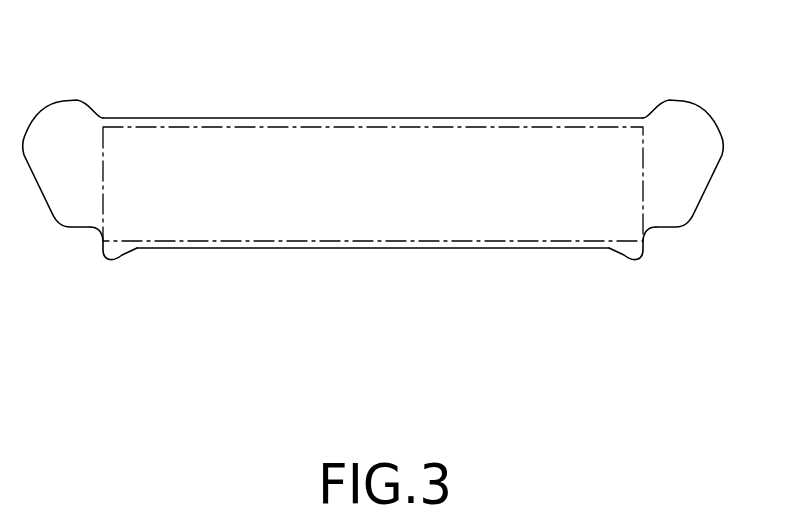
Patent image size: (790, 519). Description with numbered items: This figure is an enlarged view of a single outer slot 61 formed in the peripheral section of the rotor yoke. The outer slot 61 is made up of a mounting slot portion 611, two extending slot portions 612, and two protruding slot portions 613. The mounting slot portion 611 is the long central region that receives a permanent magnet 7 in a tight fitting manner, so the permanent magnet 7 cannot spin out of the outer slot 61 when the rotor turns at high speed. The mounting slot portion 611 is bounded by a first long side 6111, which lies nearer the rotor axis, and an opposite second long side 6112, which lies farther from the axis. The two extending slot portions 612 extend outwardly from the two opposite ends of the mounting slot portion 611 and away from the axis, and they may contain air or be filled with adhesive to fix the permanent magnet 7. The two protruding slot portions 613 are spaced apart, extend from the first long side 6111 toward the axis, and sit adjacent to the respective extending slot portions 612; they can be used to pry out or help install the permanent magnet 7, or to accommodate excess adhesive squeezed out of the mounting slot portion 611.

The outer slot 61 is at (395, 196).
The mounting slot portion 611 is at (373, 189).
The first long side 6111 is at (540, 247).
The second long side 6112 is at (550, 118).
The extending slot portion 612 is at (67, 163).
The protruding slot portion 613 is at (115, 250).
The permanent magnet 7 is at (422, 128).